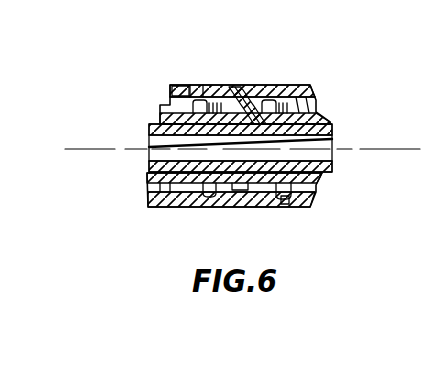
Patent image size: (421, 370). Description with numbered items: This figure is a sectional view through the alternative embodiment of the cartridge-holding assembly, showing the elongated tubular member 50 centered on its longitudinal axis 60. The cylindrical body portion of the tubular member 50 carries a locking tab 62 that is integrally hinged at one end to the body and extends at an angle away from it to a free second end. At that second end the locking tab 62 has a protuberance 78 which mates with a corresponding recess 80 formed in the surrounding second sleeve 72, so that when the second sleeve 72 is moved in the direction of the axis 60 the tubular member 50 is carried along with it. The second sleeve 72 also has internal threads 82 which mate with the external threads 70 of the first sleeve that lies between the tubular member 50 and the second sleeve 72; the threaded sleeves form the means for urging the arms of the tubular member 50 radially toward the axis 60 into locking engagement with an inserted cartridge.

The elongated tubular member 50 is at (334, 135).
The longitudinal axis 60 is at (351, 155).
The locking tab 62 is at (149, 154).
The external threads 70 is at (170, 91).
The second sleeve 72 is at (310, 85).
The protuberance 78 is at (233, 100).
The recess 80 is at (240, 88).
The internal threads 82 is at (197, 85).